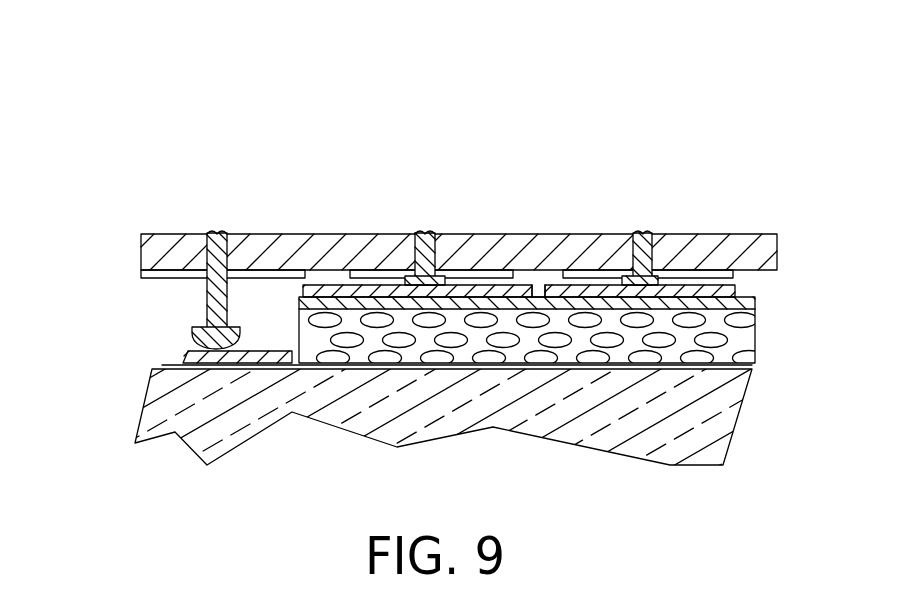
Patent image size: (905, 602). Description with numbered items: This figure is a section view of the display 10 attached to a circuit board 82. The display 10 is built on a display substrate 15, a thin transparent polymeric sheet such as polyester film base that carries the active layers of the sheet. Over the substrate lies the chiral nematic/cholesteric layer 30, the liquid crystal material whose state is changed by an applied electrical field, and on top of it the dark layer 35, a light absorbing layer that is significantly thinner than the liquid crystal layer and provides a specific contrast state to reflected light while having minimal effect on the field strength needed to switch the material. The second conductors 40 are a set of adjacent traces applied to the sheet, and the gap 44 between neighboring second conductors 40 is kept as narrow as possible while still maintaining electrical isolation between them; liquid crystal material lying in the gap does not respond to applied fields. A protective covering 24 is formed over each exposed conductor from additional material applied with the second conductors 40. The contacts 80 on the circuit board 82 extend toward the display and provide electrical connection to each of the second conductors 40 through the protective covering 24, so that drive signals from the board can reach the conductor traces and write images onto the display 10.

The display 10 is at (350, 108).
The display substrate 15 is at (143, 415).
The protective covering 24 is at (183, 354).
The chiral nematic/cholesteric layer 30 is at (750, 337).
The dark layer 35 is at (735, 298).
The second conductors 40 is at (558, 290).
The gap 44 is at (533, 292).
The contacts 80 is at (222, 232).
The circuit board 82 is at (141, 237).